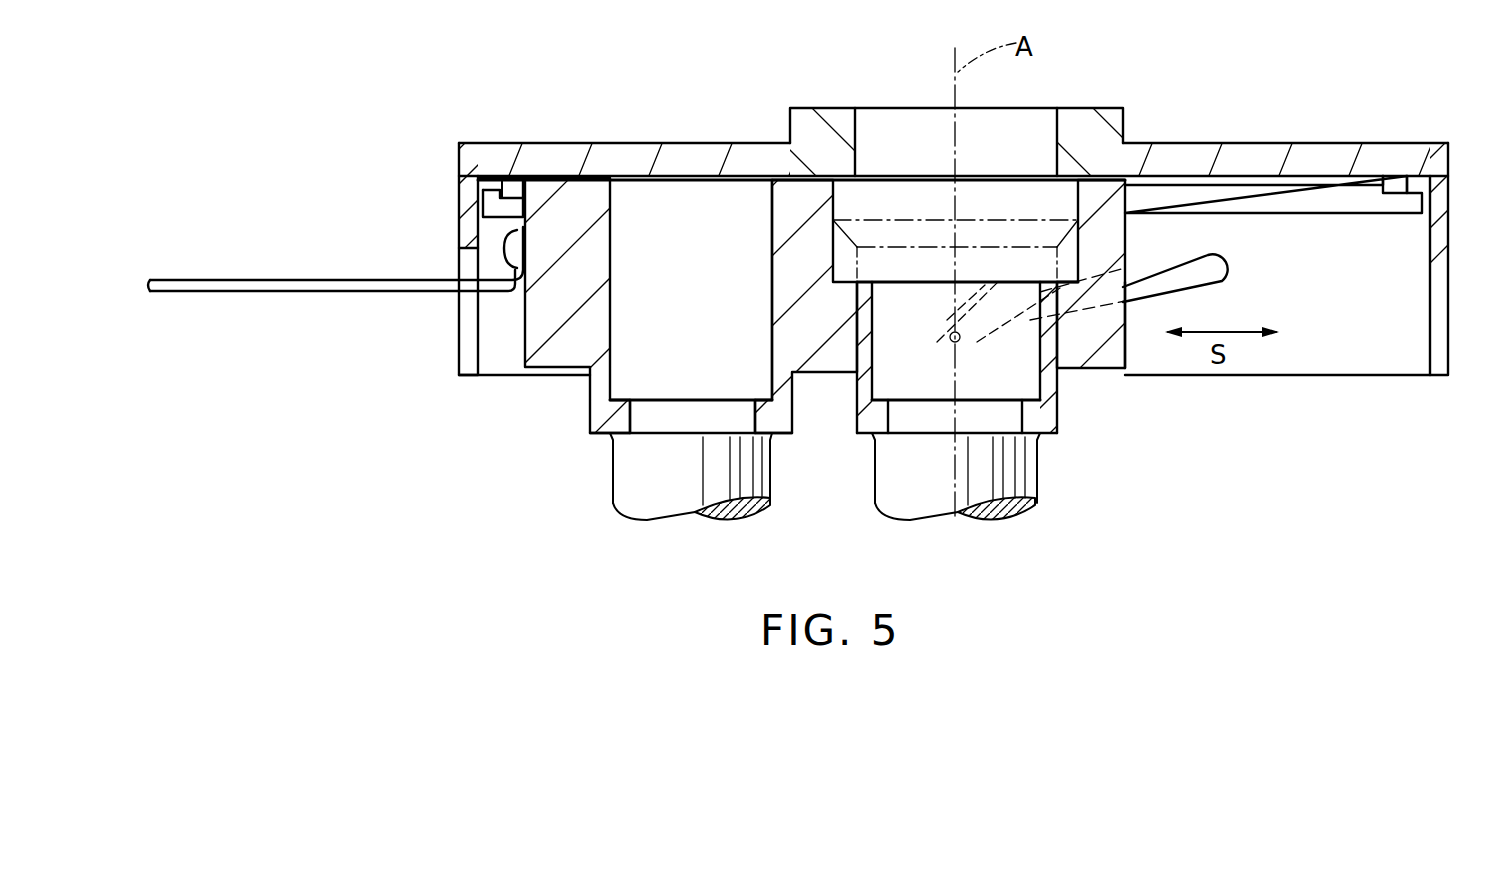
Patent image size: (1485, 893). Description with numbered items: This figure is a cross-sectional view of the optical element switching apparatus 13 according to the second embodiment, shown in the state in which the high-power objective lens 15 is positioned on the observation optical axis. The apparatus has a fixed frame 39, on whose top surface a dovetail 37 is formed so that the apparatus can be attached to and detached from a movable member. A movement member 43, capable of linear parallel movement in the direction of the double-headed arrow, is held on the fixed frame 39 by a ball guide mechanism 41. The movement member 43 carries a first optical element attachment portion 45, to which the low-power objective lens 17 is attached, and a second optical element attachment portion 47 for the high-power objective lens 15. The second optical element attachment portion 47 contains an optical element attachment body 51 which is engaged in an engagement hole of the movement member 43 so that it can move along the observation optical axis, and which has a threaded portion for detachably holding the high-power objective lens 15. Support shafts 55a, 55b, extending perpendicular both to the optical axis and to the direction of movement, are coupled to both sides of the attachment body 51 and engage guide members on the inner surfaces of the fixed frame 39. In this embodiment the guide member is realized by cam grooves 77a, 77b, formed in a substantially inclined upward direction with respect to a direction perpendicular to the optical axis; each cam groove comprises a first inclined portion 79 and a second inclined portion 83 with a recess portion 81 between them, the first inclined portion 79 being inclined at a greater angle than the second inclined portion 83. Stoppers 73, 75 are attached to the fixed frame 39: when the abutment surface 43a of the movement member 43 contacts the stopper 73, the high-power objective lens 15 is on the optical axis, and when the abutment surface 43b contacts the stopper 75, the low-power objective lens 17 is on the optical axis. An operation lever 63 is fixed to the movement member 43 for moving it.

The optical element switching apparatus 13 is at (1212, 105).
The high-power objective lens 15 is at (1040, 490).
The low-power objective lens 17 is at (610, 486).
The dovetail 37 is at (814, 108).
The fixed frame 39 is at (683, 143).
The ball guide mechanism 41 is at (1316, 185).
The movement member 43 is at (523, 340).
The abutment surface 43a is at (483, 203).
The abutment surface 43b is at (1130, 338).
The first optical element attachment portion 45 is at (590, 410).
The second optical element attachment portion 47 is at (1075, 410).
The optical element attachment body 51 is at (852, 402).
The support shaft 55a is at (950, 350).
The support shaft 55b is at (966, 302).
The operation lever 63 is at (263, 280).
The stopper 73 is at (507, 176).
The stopper 75 is at (1394, 176).
The cam groove 77a is at (1232, 268).
The cam groove 77b is at (1077, 294).
The first inclined portion 79 is at (963, 292).
The recess portion 81 is at (1024, 324).
The second inclined portion 83 is at (1168, 244).